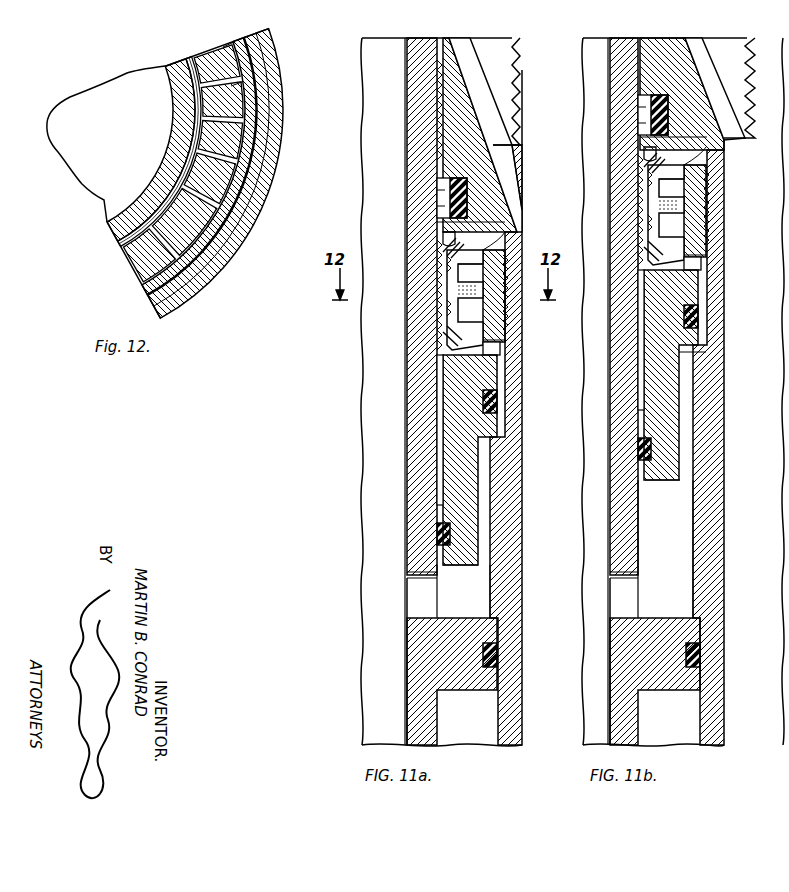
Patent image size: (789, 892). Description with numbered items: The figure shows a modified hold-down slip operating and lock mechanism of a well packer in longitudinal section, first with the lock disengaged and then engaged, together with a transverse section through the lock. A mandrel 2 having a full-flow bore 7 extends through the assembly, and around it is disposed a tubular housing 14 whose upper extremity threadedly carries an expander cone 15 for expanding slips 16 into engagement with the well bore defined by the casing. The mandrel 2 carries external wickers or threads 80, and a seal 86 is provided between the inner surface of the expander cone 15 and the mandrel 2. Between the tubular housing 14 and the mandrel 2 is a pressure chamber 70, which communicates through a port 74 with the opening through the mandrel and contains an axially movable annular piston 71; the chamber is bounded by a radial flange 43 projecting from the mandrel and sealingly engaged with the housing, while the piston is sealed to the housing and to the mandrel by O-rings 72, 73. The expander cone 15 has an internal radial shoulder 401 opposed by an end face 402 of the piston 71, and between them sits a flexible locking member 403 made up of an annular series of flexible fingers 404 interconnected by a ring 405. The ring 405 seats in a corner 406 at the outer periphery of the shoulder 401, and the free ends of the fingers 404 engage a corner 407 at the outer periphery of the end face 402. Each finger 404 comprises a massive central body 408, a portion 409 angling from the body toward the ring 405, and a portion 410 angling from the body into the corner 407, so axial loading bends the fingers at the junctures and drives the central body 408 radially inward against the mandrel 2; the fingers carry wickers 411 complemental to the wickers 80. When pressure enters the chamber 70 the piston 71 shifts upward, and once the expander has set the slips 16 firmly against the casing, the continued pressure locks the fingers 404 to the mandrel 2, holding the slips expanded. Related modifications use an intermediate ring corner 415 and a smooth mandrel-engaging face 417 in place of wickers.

In FIG. 12, the mandrel 2 is at (162, 131).
In FIG. 11A, the mandrel 2 is at (400, 412).
In FIG. 11B, the mandrel 2 is at (603, 431).
In FIG. 12, the bore 7 is at (103, 203).
In FIG. 11A, the bore 7 is at (452, 681).
In FIG. 11B, the bore 7 is at (609, 540).
In FIG. 12, the tubular housing 14 is at (274, 92).
In FIG. 11A, the tubular housing 14 is at (505, 521).
In FIG. 11B, the tubular housing 14 is at (707, 580).
In FIG. 12, the expander cone 15 is at (272, 78).
In FIG. 11A, the expander cone 15 is at (452, 130).
In FIG. 11B, the expander cone 15 is at (652, 78).
In FIG. 11A, the slips 16 is at (510, 69).
In FIG. 11B, the slips 16 is at (744, 87).
In FIG. 11A, the radial flange 43 is at (486, 675).
In FIG. 11B, the radial flange 43 is at (690, 636).
In FIG. 11A, the pressure chamber 70 is at (476, 590).
In FIG. 11B, the pressure chamber 70 is at (676, 522).
In FIG. 12, the piston 71 is at (213, 277).
In FIG. 11A, the piston 71 is at (479, 452).
In FIG. 11B, the piston 71 is at (702, 375).
In FIG. 11A, the O-ring 72 is at (495, 407).
In FIG. 11B, the O-ring 72 is at (724, 316).
In FIG. 11A, the O-ring 73 is at (439, 532).
In FIG. 11B, the O-ring 73 is at (668, 492).
In FIG. 11A, the port 74 is at (438, 575).
In FIG. 11B, the port 74 is at (612, 590).
In FIG. 12, the wickers 80 is at (190, 97).
In FIG. 11A, the wickers 80 is at (436, 372).
In FIG. 11B, the wickers 80 is at (594, 340).
In FIG. 11A, the seal 86 is at (442, 197).
In FIG. 11B, the seal 86 is at (643, 118).
In FIG. 11A, the internal radial shoulder 401 is at (441, 239).
In FIG. 11B, the internal radial shoulder 401 is at (586, 151).
In FIG. 11A, the end face 402 is at (442, 343).
In FIG. 11B, the end face 402 is at (683, 361).
In FIG. 12, the flexible locking member 403 is at (252, 130).
In FIG. 11A, the flexible locking member 403 is at (438, 312).
In FIG. 11B, the flexible locking member 403 is at (730, 211).
In FIG. 12, the flexible fingers 404 is at (238, 60).
In FIG. 11A, the flexible fingers 404 is at (452, 245).
In FIG. 11B, the flexible fingers 404 is at (653, 208).
In FIG. 11A, the ring 405 is at (482, 260).
In FIG. 11B, the ring 405 is at (736, 275).
In FIG. 11A, the corner 406 is at (470, 252).
In FIG. 11B, the corner 406 is at (734, 142).
In FIG. 11A, the corner 407 is at (478, 348).
In FIG. 11B, the corner 407 is at (722, 271).
In FIG. 11A, the central body 408 is at (480, 305).
In FIG. 11B, the central body 408 is at (733, 207).
In FIG. 11A, the portion 409 is at (472, 268).
In FIG. 11B, the portion 409 is at (717, 170).
In FIG. 11A, the portion 410 is at (482, 333).
In FIG. 11B, the portion 410 is at (735, 286).
In FIG. 12, the wickers 411 is at (177, 194).
In FIG. 11A, the wickers 411 is at (446, 297).
In FIG. 11B, the wickers 411 is at (632, 215).
In FIG. 11B, the corner 415 is at (734, 352).
In FIG. 11B, the mandrel-engaging face 417 is at (740, 362).